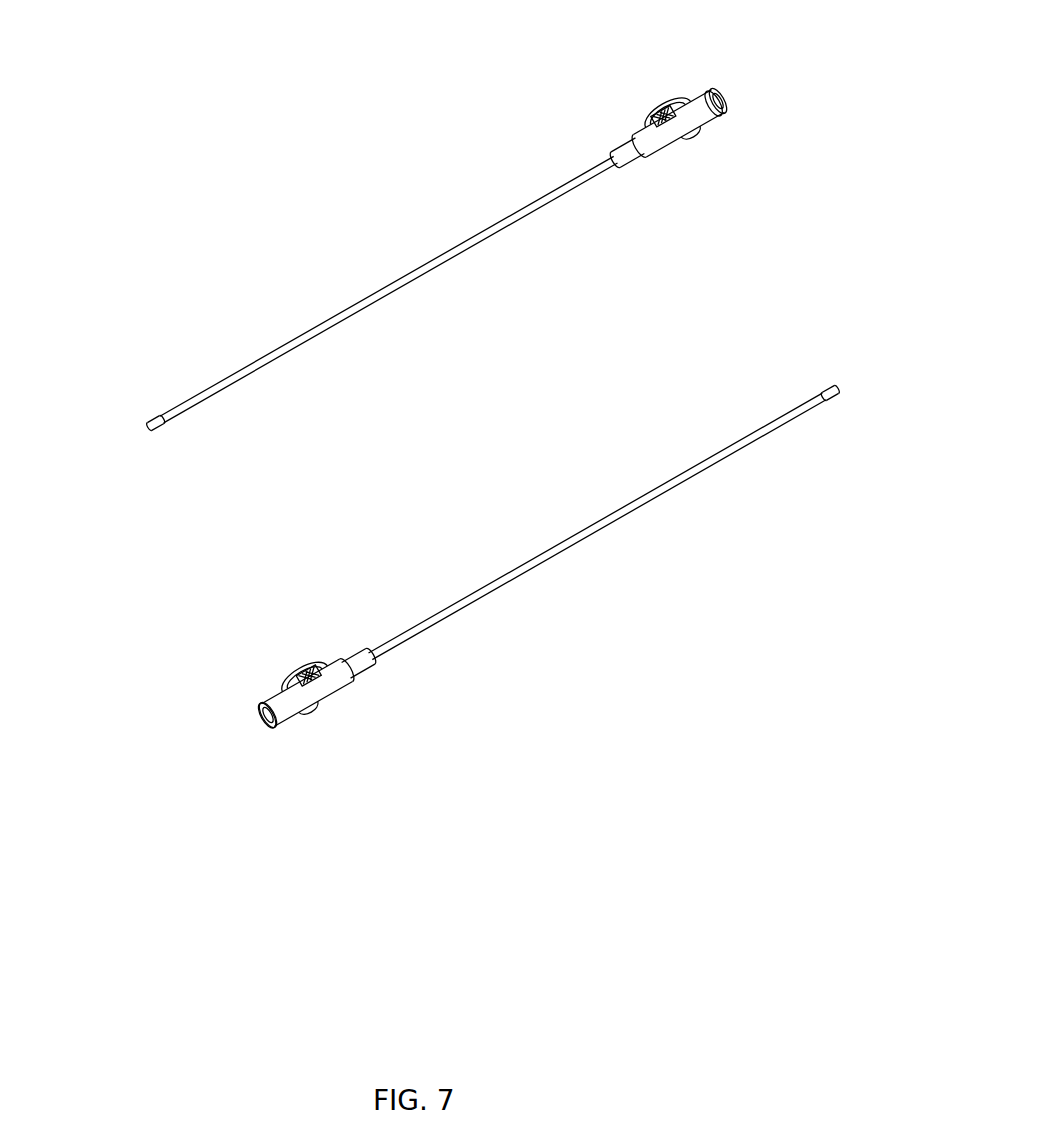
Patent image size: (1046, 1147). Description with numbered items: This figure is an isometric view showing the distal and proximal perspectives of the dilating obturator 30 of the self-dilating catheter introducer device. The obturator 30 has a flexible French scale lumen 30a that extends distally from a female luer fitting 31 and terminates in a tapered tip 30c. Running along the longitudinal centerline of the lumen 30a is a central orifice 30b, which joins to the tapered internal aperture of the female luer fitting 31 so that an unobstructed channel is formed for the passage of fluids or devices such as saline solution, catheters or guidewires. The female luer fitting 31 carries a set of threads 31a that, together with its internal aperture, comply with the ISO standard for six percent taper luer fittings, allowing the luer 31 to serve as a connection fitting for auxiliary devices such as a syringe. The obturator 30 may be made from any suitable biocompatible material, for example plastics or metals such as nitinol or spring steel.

The dilating obturator 30 is at (565, 195).
The flexible French scale lumen 30a is at (490, 227).
The central orifice 30b is at (142, 432).
The tapered tip 30c is at (830, 384).
The female luer fitting 31 is at (652, 135).
The set of threads 31a is at (280, 732).